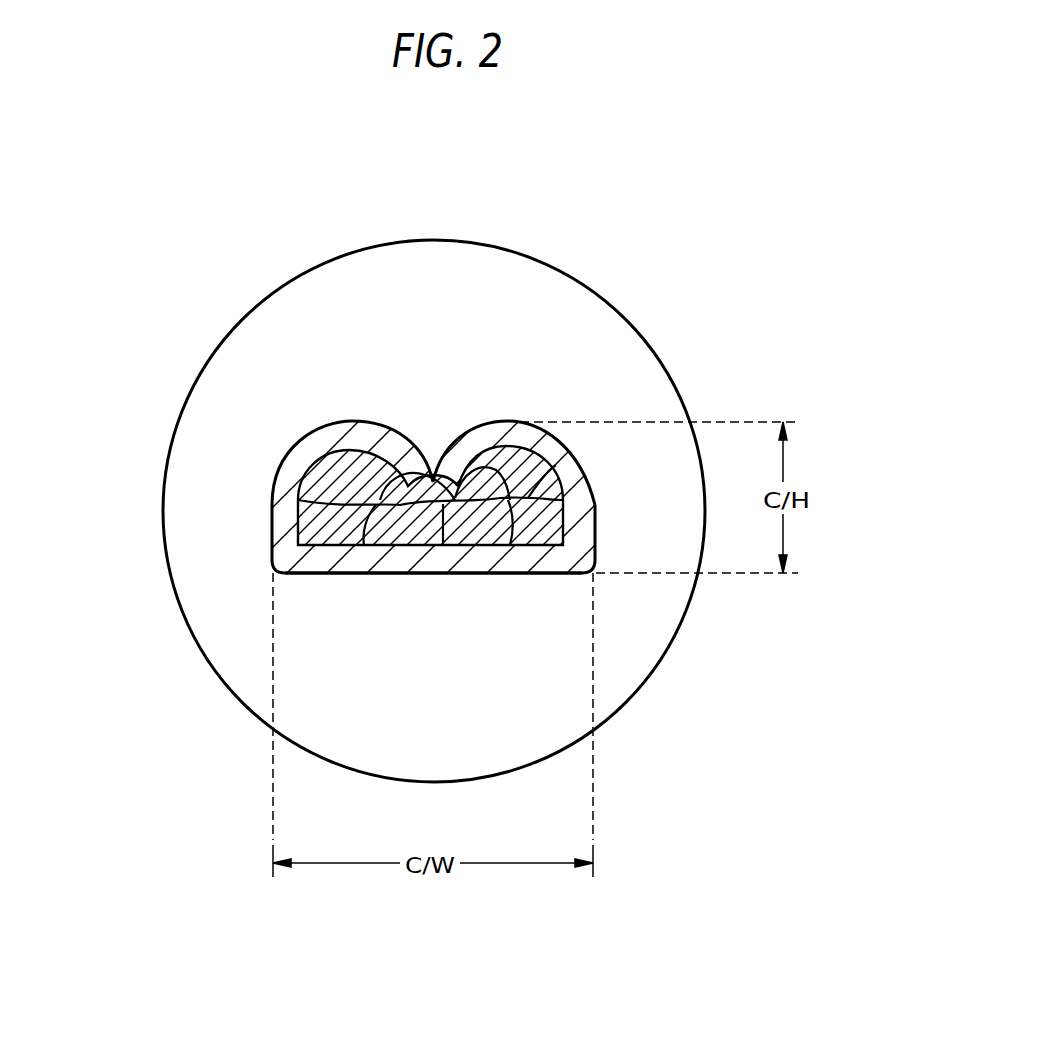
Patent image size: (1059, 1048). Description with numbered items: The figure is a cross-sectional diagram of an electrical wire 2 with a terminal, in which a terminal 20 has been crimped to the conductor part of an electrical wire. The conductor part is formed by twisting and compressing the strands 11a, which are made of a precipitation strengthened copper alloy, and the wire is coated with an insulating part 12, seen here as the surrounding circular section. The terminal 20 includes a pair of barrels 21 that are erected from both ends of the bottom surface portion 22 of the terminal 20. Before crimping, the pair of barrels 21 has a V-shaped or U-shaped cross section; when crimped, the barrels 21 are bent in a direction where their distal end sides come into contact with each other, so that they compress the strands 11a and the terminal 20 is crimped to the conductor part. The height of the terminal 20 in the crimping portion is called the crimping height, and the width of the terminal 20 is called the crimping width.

The electrical wire with the terminal 2 is at (677, 243).
The insulating part 12 is at (622, 387).
The terminal 20 is at (307, 457).
The pair of barrels 21 is at (363, 432).
The bottom surface portion 22 is at (473, 575).
The strands 11a is at (513, 470).